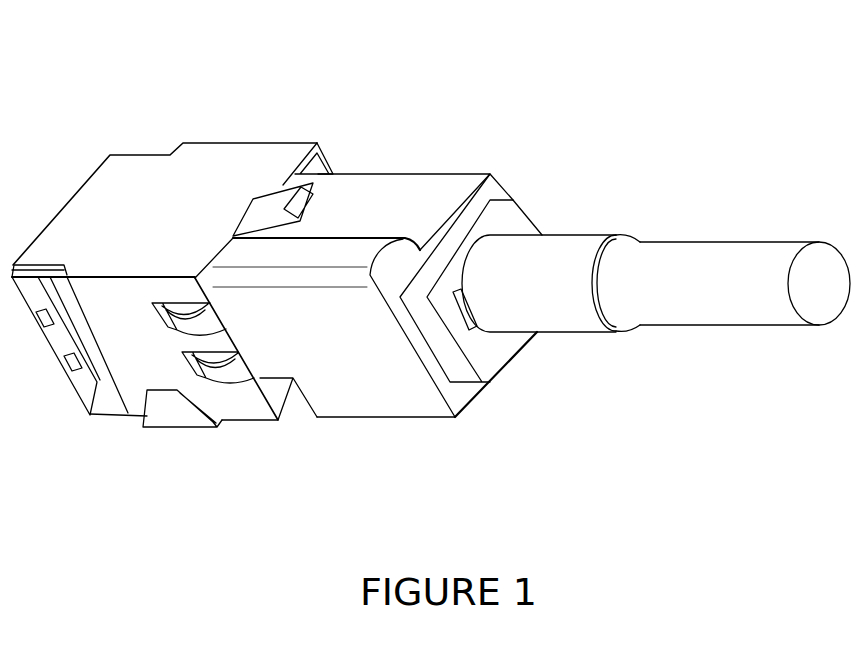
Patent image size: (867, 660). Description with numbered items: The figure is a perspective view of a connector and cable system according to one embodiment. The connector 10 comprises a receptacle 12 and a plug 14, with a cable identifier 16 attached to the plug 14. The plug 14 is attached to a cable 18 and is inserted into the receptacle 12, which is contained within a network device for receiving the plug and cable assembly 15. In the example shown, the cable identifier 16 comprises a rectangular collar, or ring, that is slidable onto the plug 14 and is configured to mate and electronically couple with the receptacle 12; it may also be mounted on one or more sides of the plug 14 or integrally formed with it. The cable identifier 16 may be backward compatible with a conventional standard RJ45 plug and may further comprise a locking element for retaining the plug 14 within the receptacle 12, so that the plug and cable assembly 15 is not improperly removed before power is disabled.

The connector 10 is at (505, 96).
The receptacle 12 is at (240, 143).
The plug 14 is at (513, 200).
The plug and cable assembly 15 is at (492, 353).
The cable identifier 16 is at (360, 173).
The cable 18 is at (738, 242).